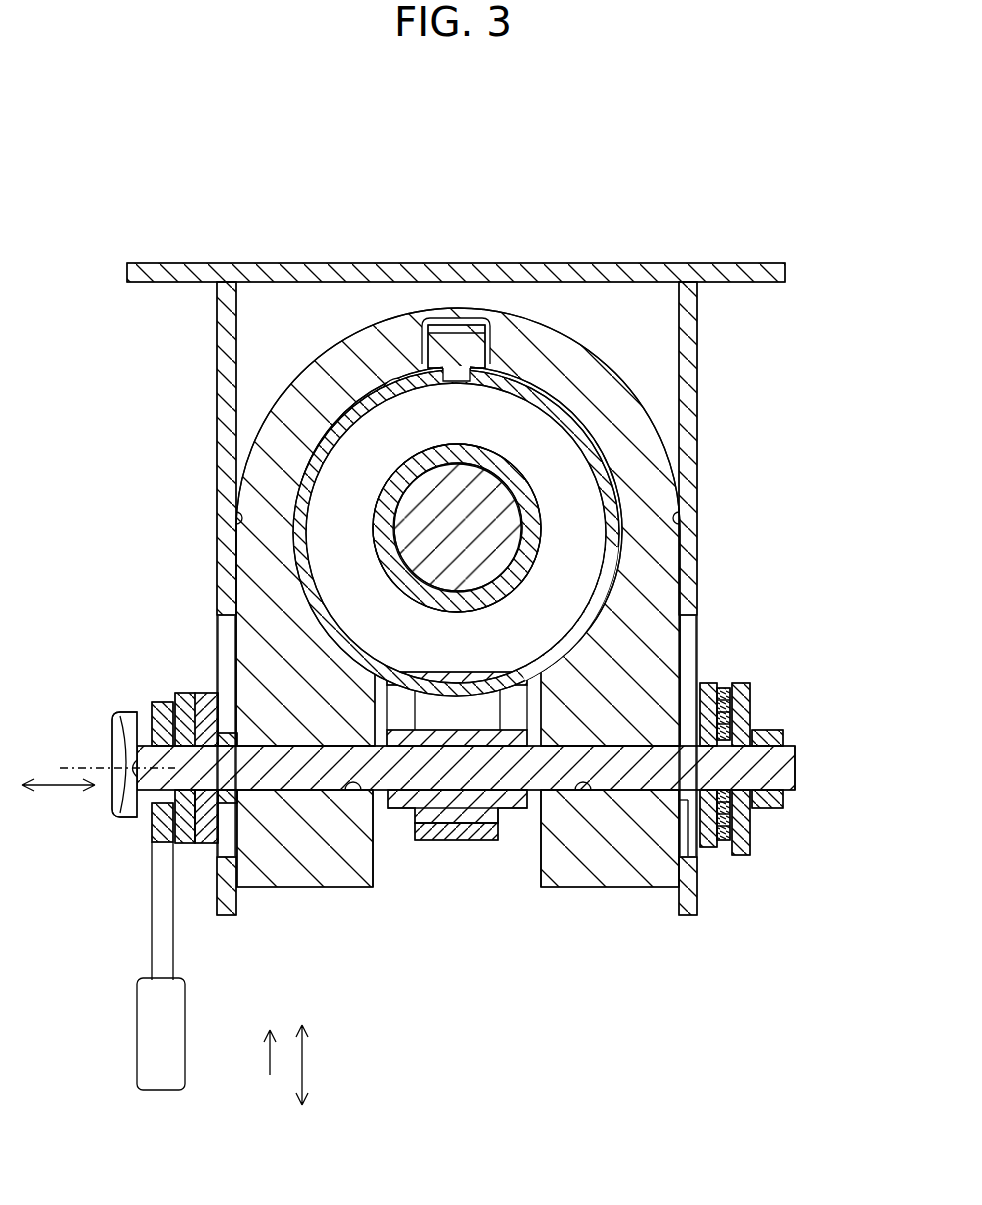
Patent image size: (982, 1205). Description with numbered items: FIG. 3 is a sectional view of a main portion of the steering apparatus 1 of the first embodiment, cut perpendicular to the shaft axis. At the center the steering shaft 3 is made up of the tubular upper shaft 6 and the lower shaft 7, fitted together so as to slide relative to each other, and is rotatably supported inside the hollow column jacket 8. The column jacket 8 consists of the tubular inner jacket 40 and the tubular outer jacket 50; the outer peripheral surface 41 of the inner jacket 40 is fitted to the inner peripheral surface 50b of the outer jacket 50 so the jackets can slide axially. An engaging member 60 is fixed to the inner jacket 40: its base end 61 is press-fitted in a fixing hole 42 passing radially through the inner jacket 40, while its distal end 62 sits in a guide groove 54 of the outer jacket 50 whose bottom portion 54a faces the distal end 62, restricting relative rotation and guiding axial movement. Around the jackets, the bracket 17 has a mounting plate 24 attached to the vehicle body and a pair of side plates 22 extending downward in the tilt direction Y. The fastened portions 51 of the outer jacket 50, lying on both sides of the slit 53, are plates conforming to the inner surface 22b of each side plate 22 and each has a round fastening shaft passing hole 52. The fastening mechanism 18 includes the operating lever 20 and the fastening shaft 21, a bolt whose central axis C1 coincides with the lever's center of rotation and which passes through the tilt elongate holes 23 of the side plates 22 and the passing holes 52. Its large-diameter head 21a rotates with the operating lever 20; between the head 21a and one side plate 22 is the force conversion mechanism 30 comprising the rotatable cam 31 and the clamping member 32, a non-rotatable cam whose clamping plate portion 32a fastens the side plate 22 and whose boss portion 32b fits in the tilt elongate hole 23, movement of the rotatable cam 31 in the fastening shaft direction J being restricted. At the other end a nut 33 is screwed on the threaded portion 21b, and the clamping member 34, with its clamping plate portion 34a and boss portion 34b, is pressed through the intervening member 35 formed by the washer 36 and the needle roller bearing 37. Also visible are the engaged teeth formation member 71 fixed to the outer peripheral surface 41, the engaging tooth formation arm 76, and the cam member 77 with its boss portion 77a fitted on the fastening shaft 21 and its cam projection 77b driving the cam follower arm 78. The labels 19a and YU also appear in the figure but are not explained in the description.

The steering apparatus 1 is at (720, 235).
The steering shaft 3 is at (170, 425).
The upper shaft 6 is at (402, 480).
The lower shaft 7 is at (420, 512).
The column jacket 8 is at (650, 228).
The bracket 17 is at (700, 325).
The fastening mechanism 18 is at (150, 856).
The guide slot 19a is at (236, 555).
The operating lever 20 is at (137, 1040).
The fastening shaft 21 is at (618, 796).
The head 21a is at (130, 806).
The threaded portion 21b is at (785, 776).
The side plates 22 is at (220, 368).
The inner surface 22b is at (236, 518).
The tilt elongate holes 23 is at (225, 620).
The mounting plate 24 is at (330, 272).
The force conversion mechanism 30 is at (205, 648).
The rotatable cam 31 is at (162, 702).
The clamping member 32 is at (200, 693).
The clamping plate portion 32a is at (205, 845).
The boss portion 32b is at (238, 806).
The nut 33 is at (770, 735).
The clamping member 34 is at (712, 690).
The clamping plate portion 34a is at (690, 860).
The boss portion 34b is at (684, 820).
The intervening member 35 is at (795, 914).
The washer 36 is at (745, 836).
The needle roller bearing 37 is at (710, 832).
The inner jacket 40 is at (592, 425).
The outer peripheral surface 41 is at (522, 366).
The fixing hole 42 is at (470, 384).
The outer jacket 50 is at (578, 325).
The inner peripheral surface 50b is at (392, 380).
The fastened portions 51 is at (300, 870).
The fastening shaft passing hole 52 is at (345, 860).
The slit 53 is at (390, 850).
The guide groove 54 is at (432, 328).
The bottom portion 54a is at (470, 326).
The engaging member 60 is at (424, 344).
The base end 61 is at (442, 386).
The distal end 62 is at (445, 345).
The engaged teeth formation member 71 is at (440, 680).
The engaging tooth formation arm 76 is at (466, 712).
The cam member 77 is at (436, 812).
The boss portion 77a is at (515, 808).
The cam projection 77b is at (475, 824).
The cam follower arm 78 is at (458, 841).
The central axis C1 is at (105, 765).
The fastening shaft direction J is at (62, 785).
The tilt direction Y is at (312, 1060).
The upward direction YU is at (265, 1055).